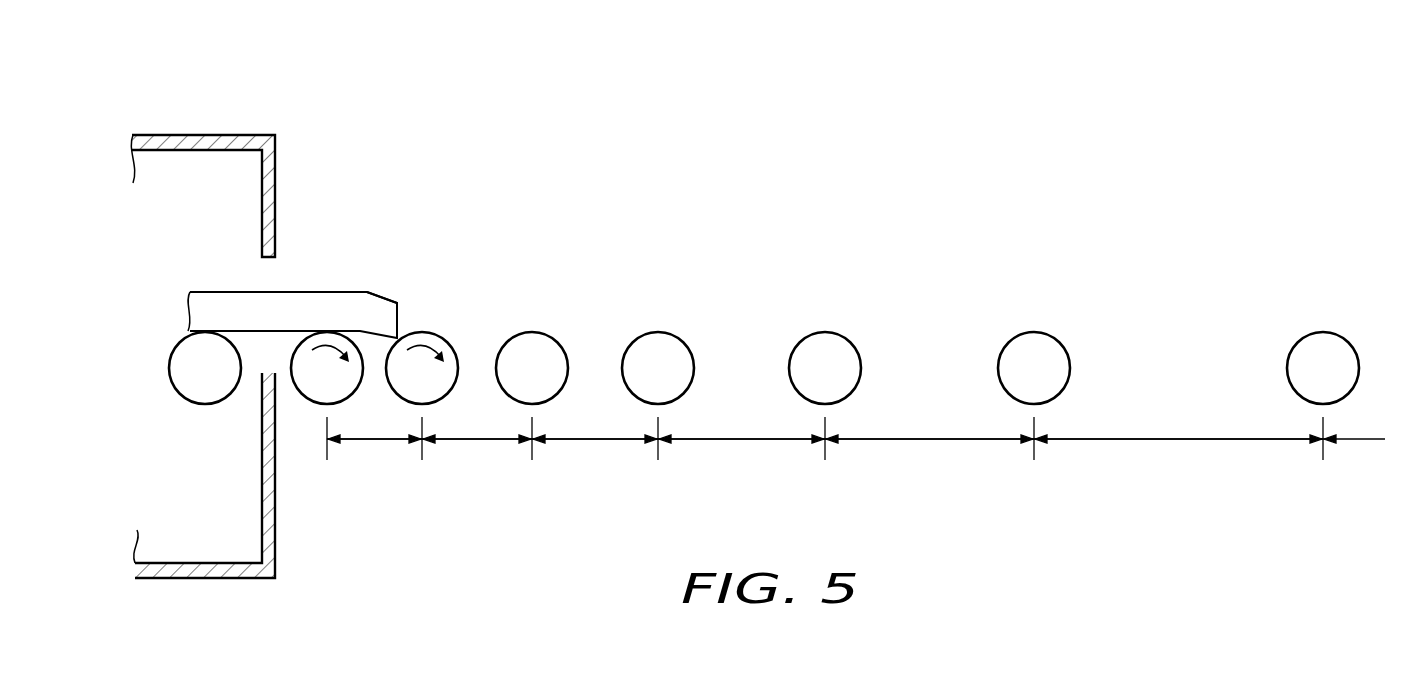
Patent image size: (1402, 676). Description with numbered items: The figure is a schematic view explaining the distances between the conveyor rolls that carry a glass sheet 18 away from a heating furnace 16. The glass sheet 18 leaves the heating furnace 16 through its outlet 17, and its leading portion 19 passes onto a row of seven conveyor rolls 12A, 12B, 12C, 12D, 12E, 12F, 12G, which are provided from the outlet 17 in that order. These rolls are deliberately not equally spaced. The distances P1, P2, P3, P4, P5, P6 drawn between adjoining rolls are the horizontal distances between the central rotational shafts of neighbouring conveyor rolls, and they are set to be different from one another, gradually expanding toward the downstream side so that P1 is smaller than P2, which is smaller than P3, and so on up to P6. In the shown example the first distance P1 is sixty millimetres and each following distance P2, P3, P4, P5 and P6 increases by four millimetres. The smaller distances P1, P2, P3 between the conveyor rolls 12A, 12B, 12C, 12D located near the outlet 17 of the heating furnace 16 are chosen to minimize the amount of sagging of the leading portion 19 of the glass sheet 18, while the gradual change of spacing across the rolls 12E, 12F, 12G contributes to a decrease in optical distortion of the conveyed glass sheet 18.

The heating furnace 16 is at (203, 134).
The outlet of the heating furnace 17 is at (273, 275).
The glass sheet 18 is at (234, 291).
The leading portion of the glass sheet 19 is at (375, 291).
The conveyor roll 12A is at (312, 405).
The conveyor roll 12B is at (420, 331).
The conveyor roll 12C is at (531, 331).
The conveyor roll 12D is at (657, 331).
The conveyor roll 12E is at (824, 331).
The conveyor roll 12F is at (1033, 331).
The conveyor roll 12G is at (1321, 331).
The distance between conveyor rolls P1 is at (374, 461).
The distance between conveyor rolls P2 is at (477, 461).
The distance between conveyor rolls P3 is at (595, 461).
The distance between conveyor rolls P4 is at (741, 461).
The distance between conveyor rolls P5 is at (929, 461).
The distance between conveyor rolls P6 is at (1178, 461).